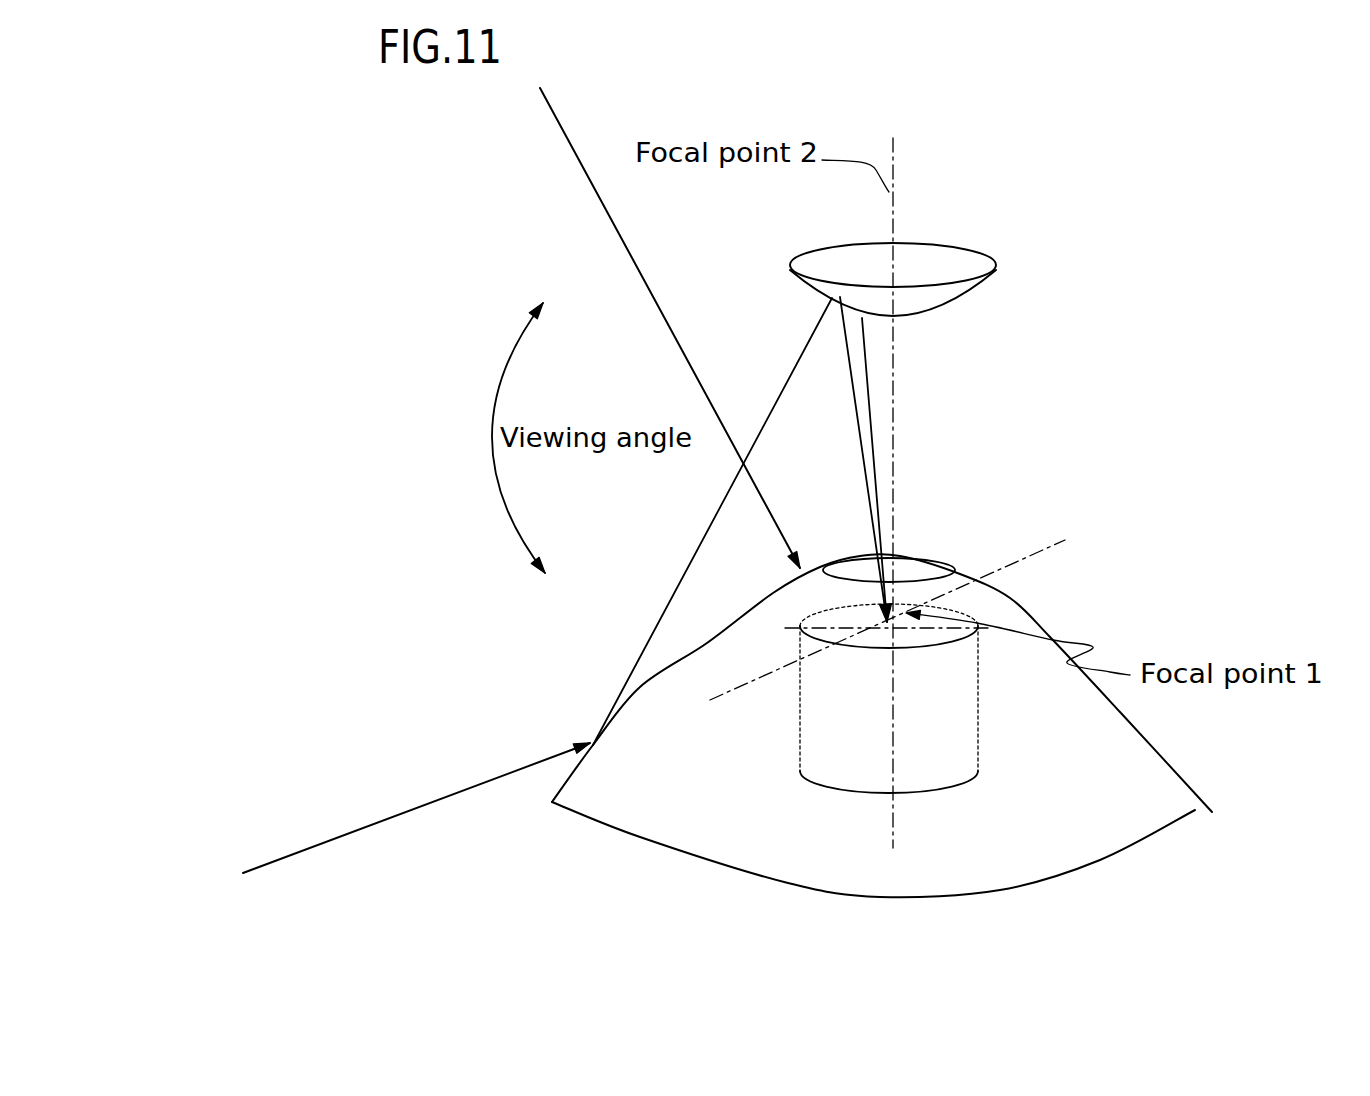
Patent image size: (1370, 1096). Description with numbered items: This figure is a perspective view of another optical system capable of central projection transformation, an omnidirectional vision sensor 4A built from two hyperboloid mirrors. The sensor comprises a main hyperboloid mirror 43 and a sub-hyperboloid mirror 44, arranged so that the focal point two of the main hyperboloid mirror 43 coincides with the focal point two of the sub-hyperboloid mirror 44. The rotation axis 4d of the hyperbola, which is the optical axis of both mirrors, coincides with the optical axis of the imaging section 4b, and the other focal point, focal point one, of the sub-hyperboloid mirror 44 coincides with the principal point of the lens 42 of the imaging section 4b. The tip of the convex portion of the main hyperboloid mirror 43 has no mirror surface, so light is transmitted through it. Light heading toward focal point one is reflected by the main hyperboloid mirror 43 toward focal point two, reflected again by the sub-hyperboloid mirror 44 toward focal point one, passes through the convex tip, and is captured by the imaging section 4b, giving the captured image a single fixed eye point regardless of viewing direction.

The omnidirectional vision sensor 4A is at (1093, 220).
The imaging section 4b is at (835, 790).
The rotation axis 4d is at (893, 165).
The lens 42 is at (812, 607).
The main hyperboloid mirror 43 is at (1012, 582).
The sub-hyperboloid mirror 44 is at (1057, 322).